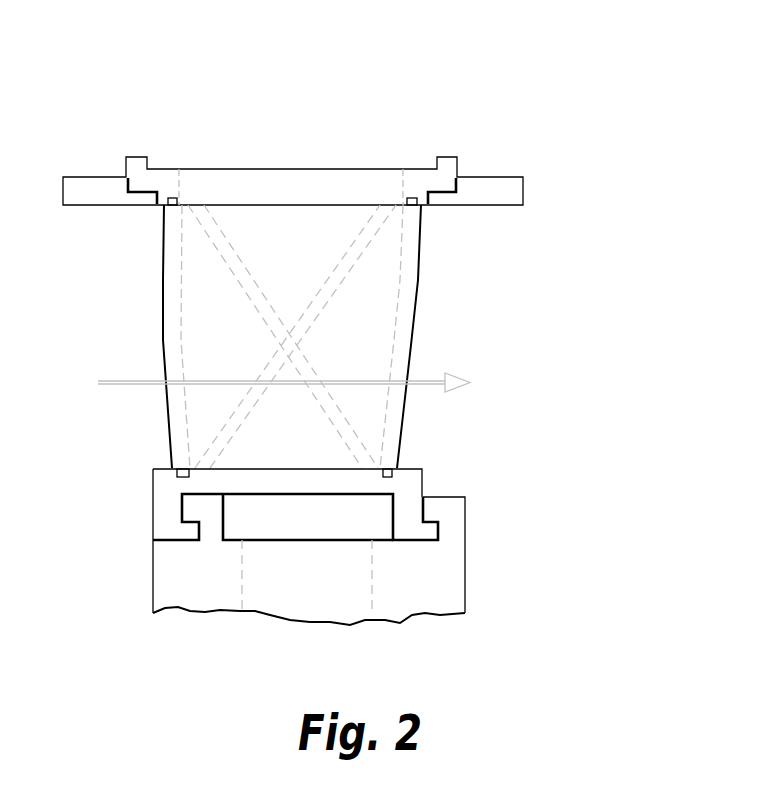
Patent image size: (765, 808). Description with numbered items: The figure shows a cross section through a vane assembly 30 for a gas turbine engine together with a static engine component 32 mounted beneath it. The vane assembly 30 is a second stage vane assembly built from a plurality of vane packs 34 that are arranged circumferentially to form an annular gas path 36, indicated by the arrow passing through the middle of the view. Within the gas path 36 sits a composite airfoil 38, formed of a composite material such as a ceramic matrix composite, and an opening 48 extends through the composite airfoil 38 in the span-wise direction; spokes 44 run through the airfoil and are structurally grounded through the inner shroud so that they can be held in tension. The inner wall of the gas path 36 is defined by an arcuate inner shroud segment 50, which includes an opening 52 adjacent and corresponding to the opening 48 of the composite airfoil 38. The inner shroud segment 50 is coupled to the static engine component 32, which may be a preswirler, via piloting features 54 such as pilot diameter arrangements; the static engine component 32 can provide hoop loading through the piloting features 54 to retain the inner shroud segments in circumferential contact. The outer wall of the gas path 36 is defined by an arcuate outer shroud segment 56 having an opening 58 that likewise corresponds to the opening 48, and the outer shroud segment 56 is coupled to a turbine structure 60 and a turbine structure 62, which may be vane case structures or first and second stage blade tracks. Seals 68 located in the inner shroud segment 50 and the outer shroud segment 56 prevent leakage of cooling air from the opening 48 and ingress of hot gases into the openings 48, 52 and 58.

The vane assembly 30 is at (658, 95).
The static engine component 32 is at (466, 585).
The vane pack 34 is at (103, 527).
The gas path 36 is at (427, 388).
The composite airfoil 38 is at (412, 348).
The spoke 44 is at (253, 305).
The opening 48 is at (398, 305).
The inner shroud segment 50 is at (153, 514).
The opening 52 is at (400, 488).
The piloting feature 54 is at (490, 521).
The outer shroud segment 56 is at (297, 169).
The opening 58 is at (182, 197).
The turbine structure 60 is at (83, 177).
The turbine structure 62 is at (510, 177).
The seal 68 is at (172, 197).